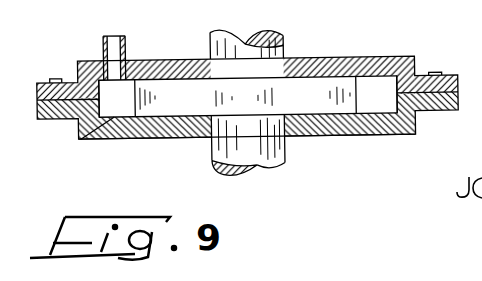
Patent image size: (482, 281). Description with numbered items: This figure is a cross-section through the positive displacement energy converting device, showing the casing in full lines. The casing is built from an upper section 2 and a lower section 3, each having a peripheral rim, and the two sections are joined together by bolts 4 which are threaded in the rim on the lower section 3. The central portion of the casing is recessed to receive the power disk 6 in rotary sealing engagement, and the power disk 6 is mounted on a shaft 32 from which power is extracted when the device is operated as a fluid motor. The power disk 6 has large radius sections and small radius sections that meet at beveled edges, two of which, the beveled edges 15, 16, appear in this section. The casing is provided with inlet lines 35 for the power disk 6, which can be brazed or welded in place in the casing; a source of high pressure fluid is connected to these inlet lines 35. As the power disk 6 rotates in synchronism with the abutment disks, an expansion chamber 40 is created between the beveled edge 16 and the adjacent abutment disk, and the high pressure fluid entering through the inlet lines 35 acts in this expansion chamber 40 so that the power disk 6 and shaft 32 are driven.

The upper section 2 is at (247, 93).
The lower section 3 is at (413, 137).
The bolts 4 is at (442, 76).
The power disk 6 is at (258, 106).
The beveled edge 15 is at (382, 108).
The beveled edge 16 is at (127, 106).
The shaft 32 is at (285, 43).
The inlet lines 35 is at (104, 43).
The expansion chamber 40 is at (80, 137).